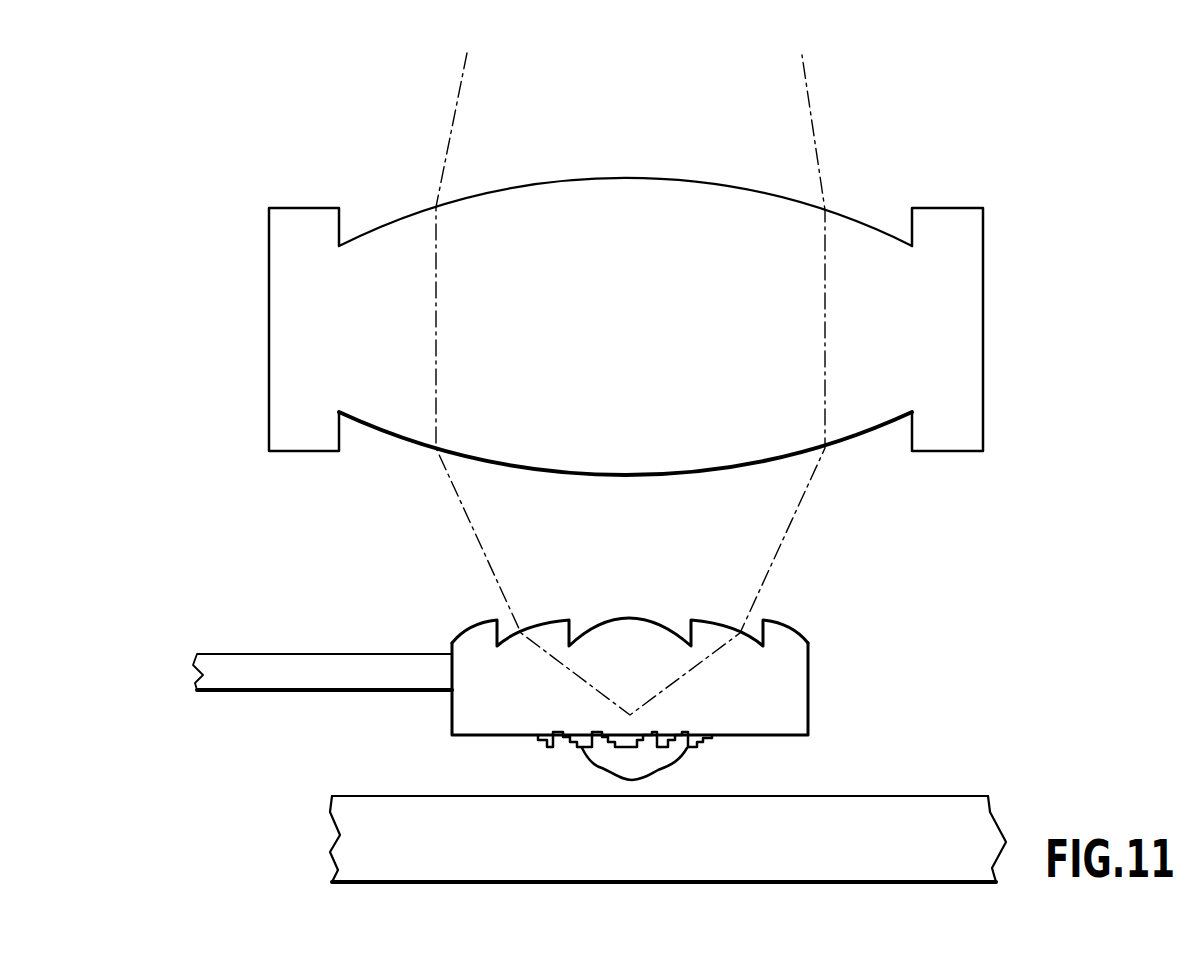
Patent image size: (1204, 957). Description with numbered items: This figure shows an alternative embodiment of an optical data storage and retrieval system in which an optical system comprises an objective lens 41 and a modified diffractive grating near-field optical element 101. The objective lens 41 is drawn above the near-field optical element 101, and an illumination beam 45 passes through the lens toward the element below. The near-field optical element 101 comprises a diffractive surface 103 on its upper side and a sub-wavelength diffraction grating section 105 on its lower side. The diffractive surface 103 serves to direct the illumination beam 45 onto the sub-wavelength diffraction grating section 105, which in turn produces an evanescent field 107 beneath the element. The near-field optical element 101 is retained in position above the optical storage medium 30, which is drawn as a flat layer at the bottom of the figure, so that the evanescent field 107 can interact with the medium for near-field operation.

The objective lens 41 is at (985, 370).
The illumination beam 45 is at (463, 511).
The diffractive surface 103 is at (790, 617).
The modified diffractive grating near-field optical element 101 is at (808, 688).
The sub-wavelength diffraction grating section 105 is at (530, 749).
The evanescent field 107 is at (658, 770).
The optical storage medium 30 is at (333, 842).